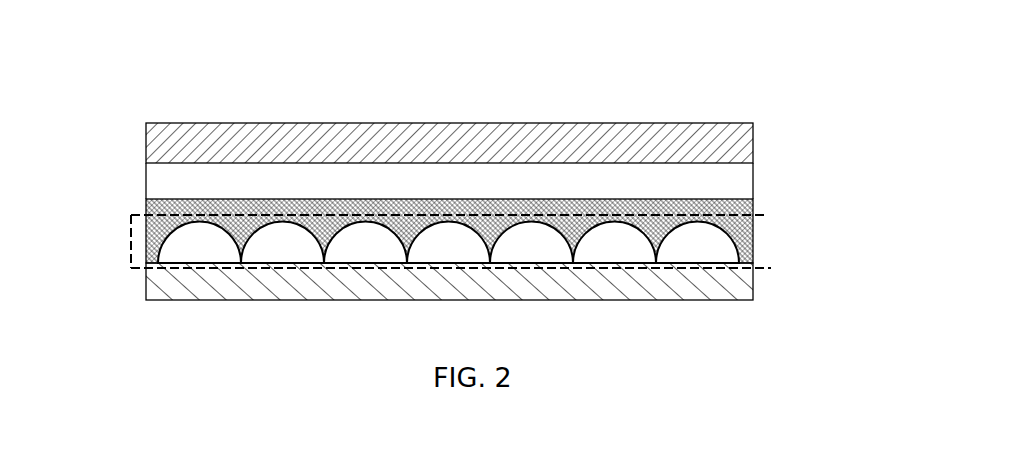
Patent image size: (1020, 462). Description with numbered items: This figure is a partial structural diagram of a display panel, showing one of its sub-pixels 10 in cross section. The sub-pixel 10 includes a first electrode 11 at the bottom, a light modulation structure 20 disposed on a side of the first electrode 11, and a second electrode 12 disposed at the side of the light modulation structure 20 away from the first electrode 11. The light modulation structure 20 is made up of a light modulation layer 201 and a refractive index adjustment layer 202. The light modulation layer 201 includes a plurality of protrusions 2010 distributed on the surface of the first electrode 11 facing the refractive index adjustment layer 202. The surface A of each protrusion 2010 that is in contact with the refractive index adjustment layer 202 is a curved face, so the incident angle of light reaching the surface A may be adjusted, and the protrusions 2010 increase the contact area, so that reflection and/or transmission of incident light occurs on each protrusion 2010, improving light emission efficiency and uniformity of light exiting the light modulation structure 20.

The sub-pixel 10 is at (53, 106).
The first electrode 11 is at (170, 288).
The second electrode 12 is at (168, 150).
The light modulation structure 20 is at (532, 216).
The light modulation layer 201 is at (515, 242).
The refractive index adjustment layer 202 is at (737, 207).
The protrusion 2010 is at (441, 242).
The surface A is at (140, 217).